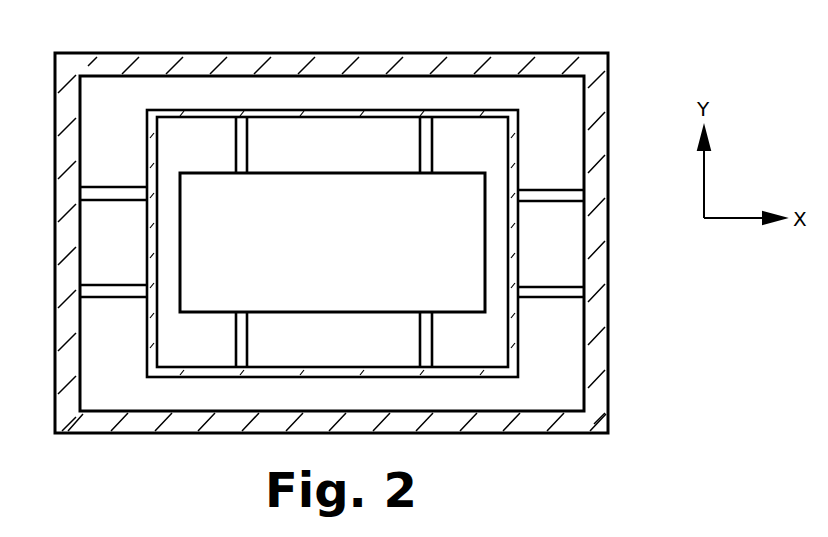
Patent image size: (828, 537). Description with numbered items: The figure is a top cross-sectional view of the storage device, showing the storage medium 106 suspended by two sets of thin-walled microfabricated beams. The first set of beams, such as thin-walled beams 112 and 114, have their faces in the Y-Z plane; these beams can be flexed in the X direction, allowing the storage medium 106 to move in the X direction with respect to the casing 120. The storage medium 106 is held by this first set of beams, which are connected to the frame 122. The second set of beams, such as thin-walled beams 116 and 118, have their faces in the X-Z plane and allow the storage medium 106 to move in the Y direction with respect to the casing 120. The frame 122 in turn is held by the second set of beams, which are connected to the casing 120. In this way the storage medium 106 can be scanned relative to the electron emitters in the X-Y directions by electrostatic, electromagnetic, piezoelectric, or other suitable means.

The storage medium 106 is at (353, 249).
The thin-walled beam 112 is at (238, 149).
The thin-walled beam 114 is at (426, 155).
The thin-walled beam 116 is at (548, 290).
The thin-walled beam 118 is at (548, 192).
The casing 120 is at (597, 379).
The frame 122 is at (515, 147).